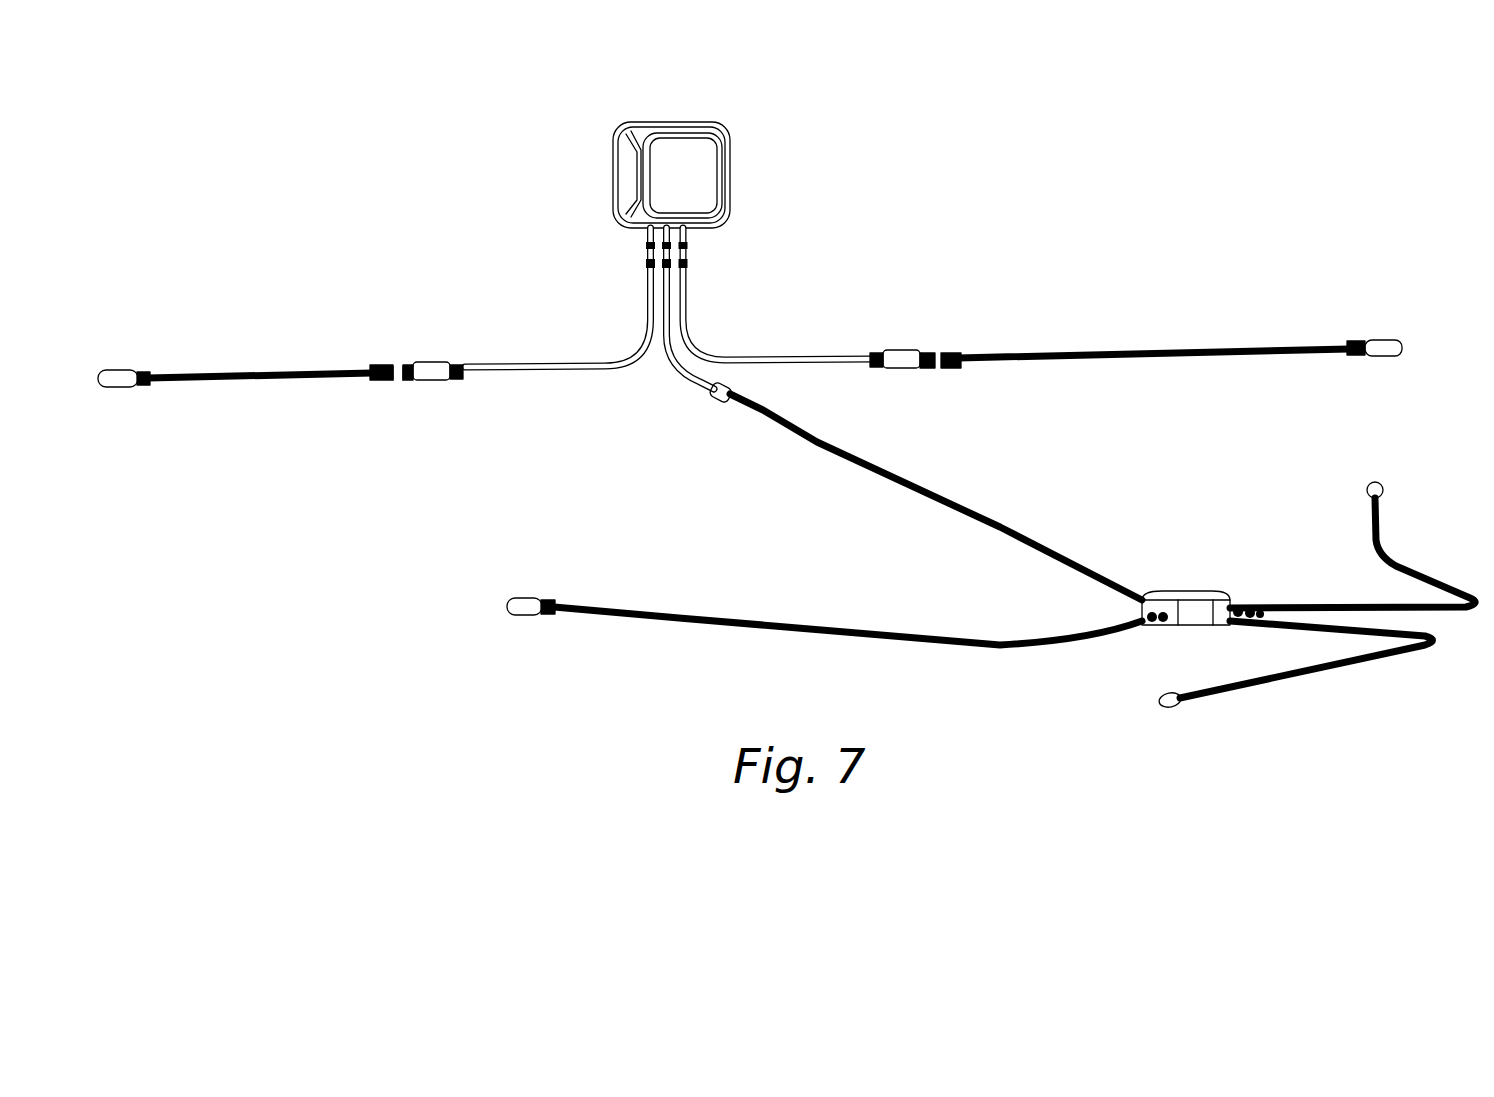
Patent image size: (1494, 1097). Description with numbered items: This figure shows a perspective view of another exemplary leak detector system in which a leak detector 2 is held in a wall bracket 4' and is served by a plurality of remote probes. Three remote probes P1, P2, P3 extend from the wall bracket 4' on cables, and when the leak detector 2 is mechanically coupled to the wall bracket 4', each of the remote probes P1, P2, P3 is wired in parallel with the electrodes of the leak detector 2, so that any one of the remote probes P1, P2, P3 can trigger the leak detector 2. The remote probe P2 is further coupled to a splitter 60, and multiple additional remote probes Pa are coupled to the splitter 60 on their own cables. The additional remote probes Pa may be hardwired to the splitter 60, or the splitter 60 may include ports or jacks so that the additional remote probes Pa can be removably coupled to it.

The leak detector 2 is at (704, 164).
The wall bracket 4' is at (578, 161).
The remote probe P1 is at (287, 356).
The remote probe P2 is at (901, 494).
The remote probe P3 is at (1141, 336).
The splitter 60 is at (1195, 594).
The additional remote probes Pa is at (686, 642).